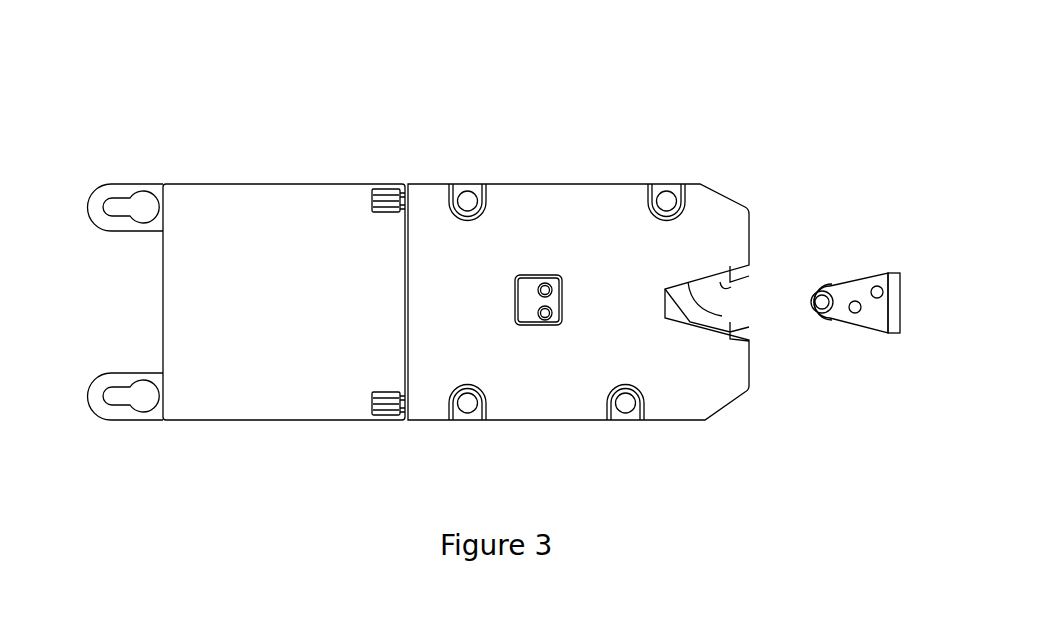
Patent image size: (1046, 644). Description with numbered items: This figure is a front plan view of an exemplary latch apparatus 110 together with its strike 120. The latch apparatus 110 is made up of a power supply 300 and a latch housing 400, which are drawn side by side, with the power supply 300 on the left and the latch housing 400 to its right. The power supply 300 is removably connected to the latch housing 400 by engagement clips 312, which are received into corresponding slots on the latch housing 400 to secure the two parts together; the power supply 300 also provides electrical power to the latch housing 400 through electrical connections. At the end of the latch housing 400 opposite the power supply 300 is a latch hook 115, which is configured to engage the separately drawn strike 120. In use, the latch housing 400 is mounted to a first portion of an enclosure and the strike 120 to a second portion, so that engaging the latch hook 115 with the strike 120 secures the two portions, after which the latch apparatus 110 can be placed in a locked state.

The latch apparatus 110 is at (497, 147).
The power supply 300 is at (199, 184).
The engagement clips 312 is at (386, 189).
The latch housing 400 is at (628, 185).
The latch hook 115 is at (722, 265).
The strike 120 is at (860, 278).